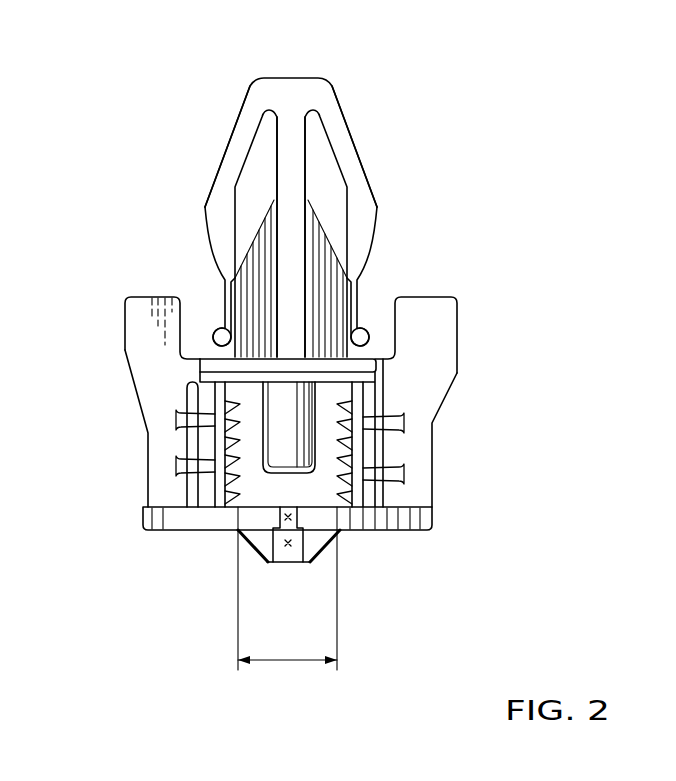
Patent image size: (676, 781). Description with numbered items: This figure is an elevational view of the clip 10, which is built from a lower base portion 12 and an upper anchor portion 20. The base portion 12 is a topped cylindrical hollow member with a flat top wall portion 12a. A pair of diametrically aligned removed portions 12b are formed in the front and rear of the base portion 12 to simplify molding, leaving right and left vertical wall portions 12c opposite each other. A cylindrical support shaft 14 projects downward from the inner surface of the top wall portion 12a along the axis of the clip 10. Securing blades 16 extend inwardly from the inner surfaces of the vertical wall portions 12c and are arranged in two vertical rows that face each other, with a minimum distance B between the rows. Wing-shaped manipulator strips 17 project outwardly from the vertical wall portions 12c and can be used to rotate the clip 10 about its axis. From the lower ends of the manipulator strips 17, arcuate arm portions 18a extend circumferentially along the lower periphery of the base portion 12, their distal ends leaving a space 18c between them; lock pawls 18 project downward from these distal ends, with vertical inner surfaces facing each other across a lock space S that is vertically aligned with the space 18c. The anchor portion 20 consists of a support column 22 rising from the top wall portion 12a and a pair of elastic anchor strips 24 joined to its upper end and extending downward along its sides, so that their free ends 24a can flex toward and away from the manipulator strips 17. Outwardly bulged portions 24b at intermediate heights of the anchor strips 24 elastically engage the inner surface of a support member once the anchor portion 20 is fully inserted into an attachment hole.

The clip 10 is at (293, 354).
The anchor portion 20 is at (290, 214).
The support column 22 is at (293, 250).
The elastic anchor strips 24 is at (237, 148).
The free ends 24a is at (213, 345).
The bulged portions 24b is at (205, 221).
The manipulator strips 17 is at (135, 315).
The base portion 12 is at (293, 487).
The top wall portion 12a is at (363, 358).
The removed portions 12b is at (330, 447).
The vertical wall portions 12c is at (215, 443).
The support shaft 14 is at (282, 402).
The securing blades 16 is at (245, 473).
The lock pawls 18 is at (275, 578).
The arm portions 18a is at (200, 520).
The space 18c is at (267, 547).
The lock space S is at (292, 545).
The distance between the rows of securing blades B is at (287, 600).